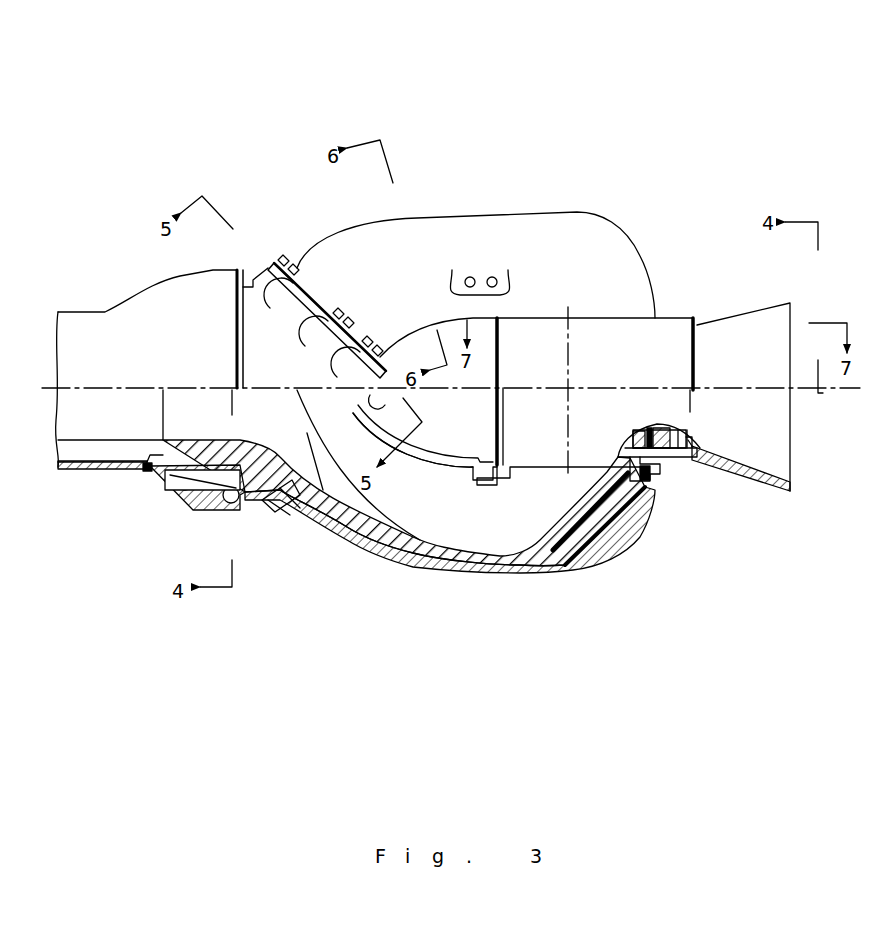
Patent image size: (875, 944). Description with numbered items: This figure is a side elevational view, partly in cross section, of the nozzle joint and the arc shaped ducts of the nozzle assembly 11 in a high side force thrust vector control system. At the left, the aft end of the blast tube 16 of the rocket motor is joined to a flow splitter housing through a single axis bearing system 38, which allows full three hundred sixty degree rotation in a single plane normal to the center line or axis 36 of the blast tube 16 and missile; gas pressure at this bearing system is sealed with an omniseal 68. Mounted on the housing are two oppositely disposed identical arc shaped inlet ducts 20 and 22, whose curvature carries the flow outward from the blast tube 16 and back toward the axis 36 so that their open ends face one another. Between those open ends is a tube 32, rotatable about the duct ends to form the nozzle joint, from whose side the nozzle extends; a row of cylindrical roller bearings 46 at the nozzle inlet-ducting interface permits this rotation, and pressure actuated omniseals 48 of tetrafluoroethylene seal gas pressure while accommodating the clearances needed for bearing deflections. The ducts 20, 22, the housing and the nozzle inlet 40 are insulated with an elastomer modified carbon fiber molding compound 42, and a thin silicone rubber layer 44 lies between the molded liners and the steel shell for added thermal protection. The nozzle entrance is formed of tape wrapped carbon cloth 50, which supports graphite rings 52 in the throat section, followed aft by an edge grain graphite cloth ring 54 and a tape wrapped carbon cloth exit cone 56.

The nozzle assembly 11 is at (465, 172).
The blast tube 16 is at (105, 332).
The arc shaped inlet duct 20 is at (507, 213).
The arc shaped inlet duct 22 is at (490, 572).
The tube 32 is at (528, 343).
The axis 36 is at (462, 393).
The single axis bearing system 38 is at (243, 515).
The nozzle inlet 40 is at (553, 453).
The elastomer modified carbon fiber molding compound 42 is at (640, 320).
The silicone rubber layer 44 is at (522, 570).
The roller bearing row 46 is at (647, 470).
The omniseal 48 is at (657, 483).
The tape wrapped carbon cloth 50 is at (640, 420).
The graphite rings 52 is at (663, 427).
The edge grain graphite cloth ring 54 is at (688, 440).
The exit cone 56 is at (717, 457).
The omniseal 68 is at (147, 467).